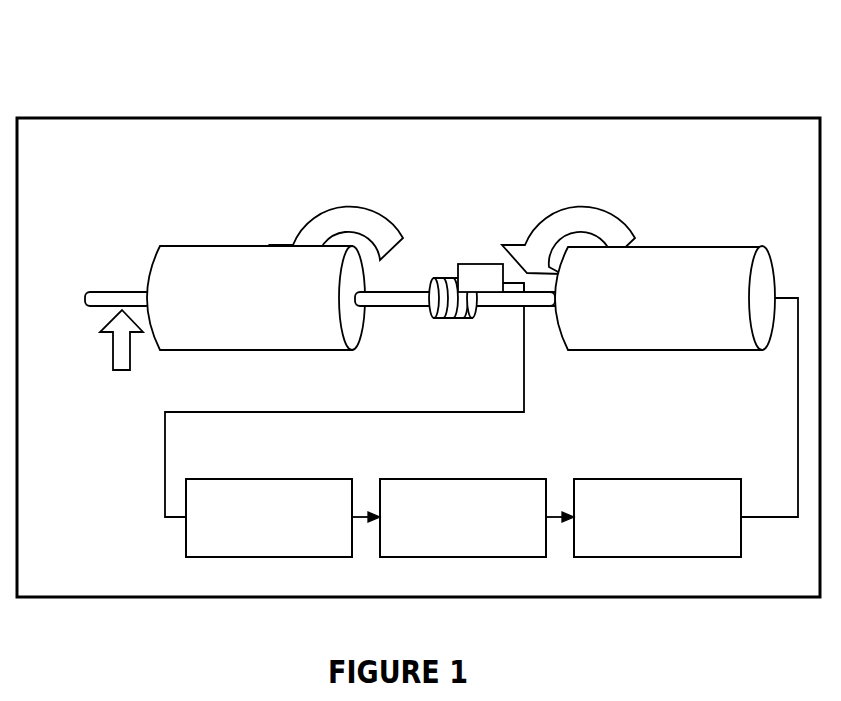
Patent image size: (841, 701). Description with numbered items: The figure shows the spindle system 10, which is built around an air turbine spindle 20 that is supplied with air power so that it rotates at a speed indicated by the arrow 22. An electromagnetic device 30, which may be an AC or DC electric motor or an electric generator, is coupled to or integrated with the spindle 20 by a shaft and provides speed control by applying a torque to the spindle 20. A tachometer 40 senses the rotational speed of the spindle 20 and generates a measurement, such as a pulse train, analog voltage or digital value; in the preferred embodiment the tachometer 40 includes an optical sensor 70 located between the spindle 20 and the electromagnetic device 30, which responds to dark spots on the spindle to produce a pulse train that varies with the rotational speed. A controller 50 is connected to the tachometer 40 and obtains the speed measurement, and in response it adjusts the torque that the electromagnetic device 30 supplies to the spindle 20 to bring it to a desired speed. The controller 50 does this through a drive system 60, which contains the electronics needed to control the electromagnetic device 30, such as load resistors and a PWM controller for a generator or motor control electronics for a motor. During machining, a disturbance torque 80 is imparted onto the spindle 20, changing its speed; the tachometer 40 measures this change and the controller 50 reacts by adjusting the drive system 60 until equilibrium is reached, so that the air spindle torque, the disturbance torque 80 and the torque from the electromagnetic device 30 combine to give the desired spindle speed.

The spindle system 10 is at (418, 305).
The air turbine spindle 20 is at (256, 298).
The arrow 22 is at (347, 211).
The electromagnetic device 30 is at (665, 298).
The tachometer 40 is at (269, 518).
The controller 50 is at (463, 518).
The drive system 60 is at (657, 518).
The optical sensor 70 is at (499, 233).
The disturbance torque 80 is at (90, 337).